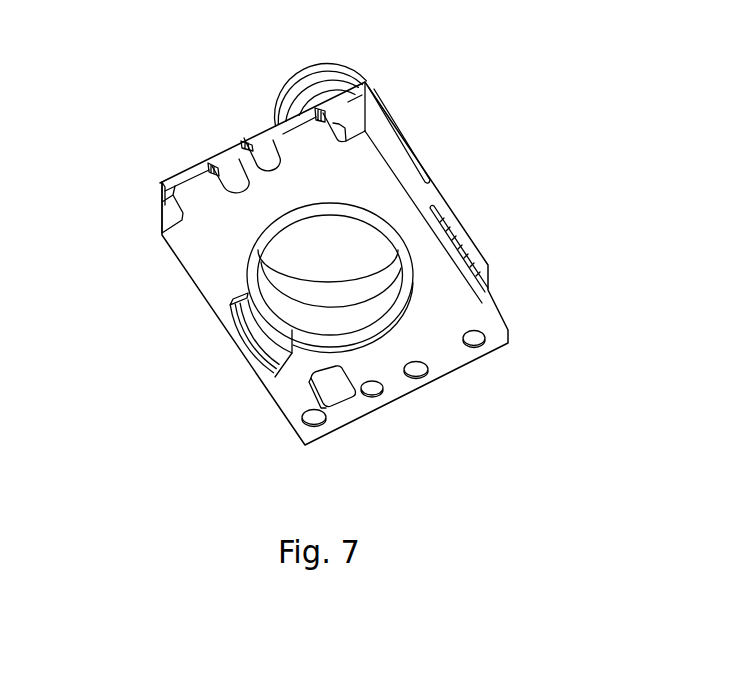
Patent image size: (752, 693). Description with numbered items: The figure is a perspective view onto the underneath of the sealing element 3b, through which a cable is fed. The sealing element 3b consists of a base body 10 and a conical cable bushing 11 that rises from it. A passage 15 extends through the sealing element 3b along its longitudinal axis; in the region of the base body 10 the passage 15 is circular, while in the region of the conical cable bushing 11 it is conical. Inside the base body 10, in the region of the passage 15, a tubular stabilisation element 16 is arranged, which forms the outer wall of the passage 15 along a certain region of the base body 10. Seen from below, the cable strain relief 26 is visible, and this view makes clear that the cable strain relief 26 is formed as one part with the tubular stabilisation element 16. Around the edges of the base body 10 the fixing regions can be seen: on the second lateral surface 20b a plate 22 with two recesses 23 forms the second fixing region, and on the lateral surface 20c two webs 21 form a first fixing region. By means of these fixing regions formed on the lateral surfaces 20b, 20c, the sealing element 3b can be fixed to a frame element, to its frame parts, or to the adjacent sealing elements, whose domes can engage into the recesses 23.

The base body 10 is at (215, 243).
The conical cable bushing 11 is at (298, 84).
The passage 15 is at (322, 252).
The tubular stabilisation element 16 is at (358, 313).
The second lateral surface 20b is at (343, 112).
The lateral surface 20c is at (472, 250).
The webs 21 is at (414, 152).
The plate 22 is at (192, 185).
The recesses 23 is at (230, 173).
The cable strain relief 26 is at (250, 339).
The sealing element 3b is at (486, 168).